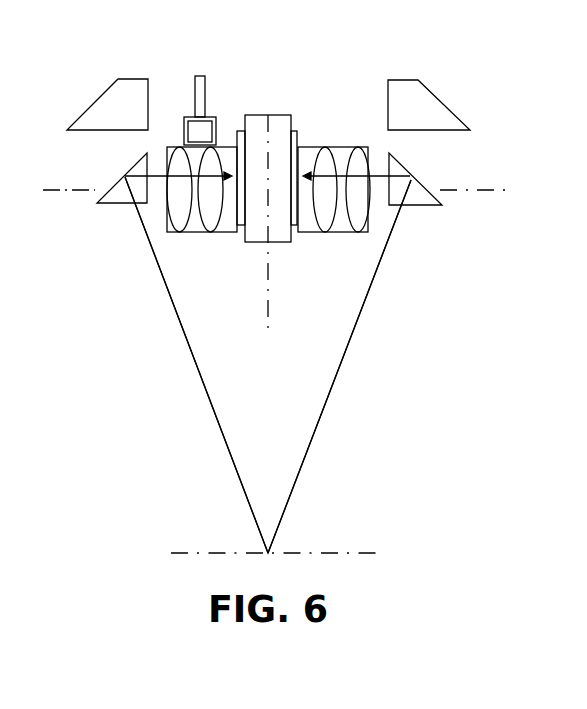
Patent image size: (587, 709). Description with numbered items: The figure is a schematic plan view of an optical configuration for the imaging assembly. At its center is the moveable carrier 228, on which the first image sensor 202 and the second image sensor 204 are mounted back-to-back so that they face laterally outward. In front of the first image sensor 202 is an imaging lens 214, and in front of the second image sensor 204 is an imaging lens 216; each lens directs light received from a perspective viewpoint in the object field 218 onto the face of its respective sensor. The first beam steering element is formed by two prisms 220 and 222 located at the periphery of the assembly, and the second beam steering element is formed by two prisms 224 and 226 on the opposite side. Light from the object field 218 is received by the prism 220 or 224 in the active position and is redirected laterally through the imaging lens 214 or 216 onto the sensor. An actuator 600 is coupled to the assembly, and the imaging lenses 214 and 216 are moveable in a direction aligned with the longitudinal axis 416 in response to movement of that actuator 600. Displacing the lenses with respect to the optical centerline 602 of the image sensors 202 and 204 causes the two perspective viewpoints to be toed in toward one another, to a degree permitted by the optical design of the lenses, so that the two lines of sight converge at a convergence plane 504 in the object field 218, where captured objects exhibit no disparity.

The prism 226 is at (114, 80).
The prism 222 is at (428, 88).
The actuator 600 is at (192, 118).
The moveable carrier 228 is at (268, 115).
The second image sensor 204 is at (240, 227).
The first image sensor 202 is at (293, 227).
The imaging lens 216 is at (215, 232).
The imaging lens 214 is at (358, 147).
The prism 224 is at (107, 190).
The prism 220 is at (428, 187).
The optical centerline 602 is at (485, 192).
The longitudinal axis 416 is at (267, 325).
The object field 218 is at (288, 421).
The convergence plane 504 is at (330, 552).